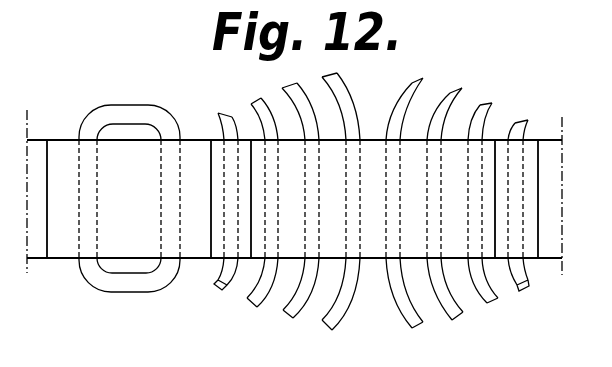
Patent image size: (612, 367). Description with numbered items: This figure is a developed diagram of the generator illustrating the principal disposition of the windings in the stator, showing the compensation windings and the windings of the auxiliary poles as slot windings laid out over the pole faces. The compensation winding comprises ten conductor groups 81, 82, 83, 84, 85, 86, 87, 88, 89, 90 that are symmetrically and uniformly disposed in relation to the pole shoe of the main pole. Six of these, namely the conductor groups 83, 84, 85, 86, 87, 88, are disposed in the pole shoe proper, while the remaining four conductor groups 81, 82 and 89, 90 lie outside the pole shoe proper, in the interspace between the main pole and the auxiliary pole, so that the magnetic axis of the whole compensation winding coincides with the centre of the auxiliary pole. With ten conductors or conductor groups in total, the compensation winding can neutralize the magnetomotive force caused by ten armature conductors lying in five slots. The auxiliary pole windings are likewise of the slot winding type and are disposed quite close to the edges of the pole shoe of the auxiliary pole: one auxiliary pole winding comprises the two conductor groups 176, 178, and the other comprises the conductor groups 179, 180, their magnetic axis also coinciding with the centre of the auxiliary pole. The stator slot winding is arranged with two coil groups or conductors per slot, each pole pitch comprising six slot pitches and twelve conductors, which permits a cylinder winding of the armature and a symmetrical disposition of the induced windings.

The conductor group 81 is at (231, 122).
The conductor group 82 is at (222, 287).
The conductor group 83 is at (256, 104).
The conductor group 84 is at (289, 90).
The conductor group 85 is at (328, 78).
The conductor group 86 is at (414, 82).
The conductor group 87 is at (453, 92).
The conductor group 88 is at (483, 104).
The conductor group 89 is at (527, 121).
The conductor group 90 is at (524, 289).
The conductor group 176 is at (90, 133).
The conductor group 178 is at (168, 133).
The conductor group 179 is at (88, 263).
The conductor group 180 is at (168, 263).